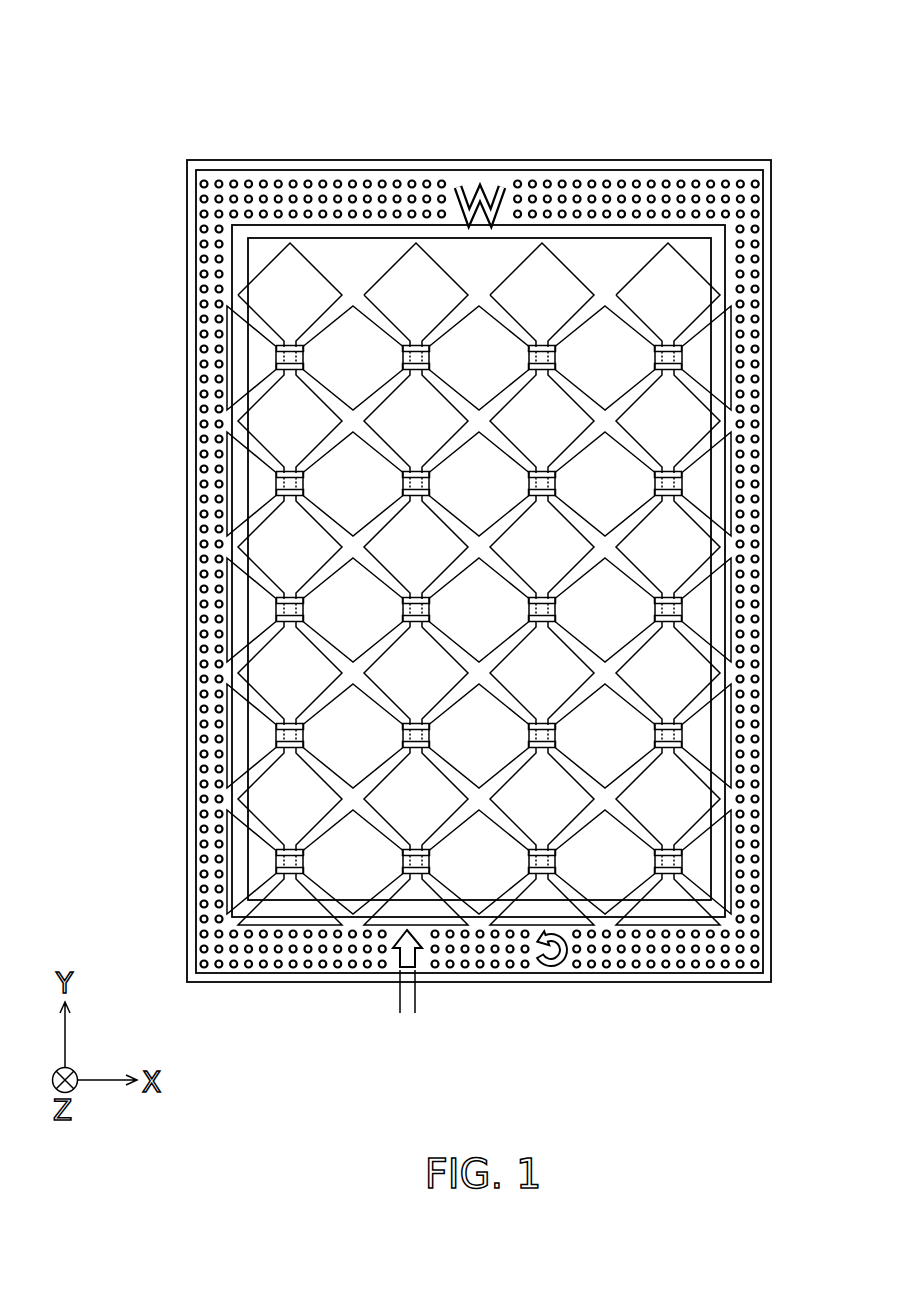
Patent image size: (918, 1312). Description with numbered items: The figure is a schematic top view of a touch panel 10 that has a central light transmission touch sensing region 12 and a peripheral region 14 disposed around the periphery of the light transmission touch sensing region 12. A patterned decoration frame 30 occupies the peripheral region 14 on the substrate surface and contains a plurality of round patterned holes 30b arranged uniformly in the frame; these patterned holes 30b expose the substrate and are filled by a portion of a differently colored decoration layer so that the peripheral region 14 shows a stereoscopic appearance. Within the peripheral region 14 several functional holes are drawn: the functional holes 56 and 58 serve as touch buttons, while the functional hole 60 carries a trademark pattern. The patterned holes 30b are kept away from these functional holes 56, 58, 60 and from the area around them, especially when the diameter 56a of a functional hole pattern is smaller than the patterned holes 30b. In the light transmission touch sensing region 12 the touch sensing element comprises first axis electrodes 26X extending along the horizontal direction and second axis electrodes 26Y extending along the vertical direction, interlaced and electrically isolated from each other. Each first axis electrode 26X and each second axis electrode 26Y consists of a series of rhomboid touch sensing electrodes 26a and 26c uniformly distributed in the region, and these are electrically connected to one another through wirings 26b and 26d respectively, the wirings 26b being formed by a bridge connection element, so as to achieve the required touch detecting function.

The touch panel 10 is at (720, 82).
The light transmission touch sensing region 12 is at (712, 438).
The peripheral region 14 is at (771, 417).
The patterned decoration frame 30 is at (766, 382).
The patterned hole 30b is at (764, 244).
The touch sensing electrode 26a is at (348, 330).
The wiring 26b is at (400, 345).
The touch sensing electrode 26c is at (265, 798).
The wiring 26d is at (272, 868).
The first axis electrode 26X is at (417, 610).
The second axis electrode 26Y is at (407, 576).
The functional hole 56 is at (386, 954).
The diameter 56a is at (353, 1000).
The functional hole 58 is at (580, 954).
The functional hole 60 is at (491, 172).